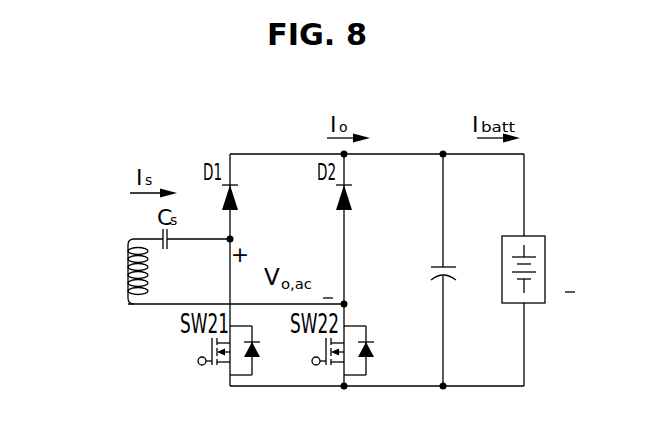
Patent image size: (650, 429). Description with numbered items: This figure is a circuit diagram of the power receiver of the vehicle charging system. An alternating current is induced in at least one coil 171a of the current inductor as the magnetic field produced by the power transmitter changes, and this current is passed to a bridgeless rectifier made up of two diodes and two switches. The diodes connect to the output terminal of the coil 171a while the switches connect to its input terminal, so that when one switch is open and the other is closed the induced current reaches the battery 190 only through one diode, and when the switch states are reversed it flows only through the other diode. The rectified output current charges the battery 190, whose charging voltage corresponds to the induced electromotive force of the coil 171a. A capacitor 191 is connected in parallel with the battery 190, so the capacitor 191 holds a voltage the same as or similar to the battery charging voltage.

The coil 171a is at (128, 291).
The capacitor 191 is at (452, 268).
The battery 190 is at (535, 236).